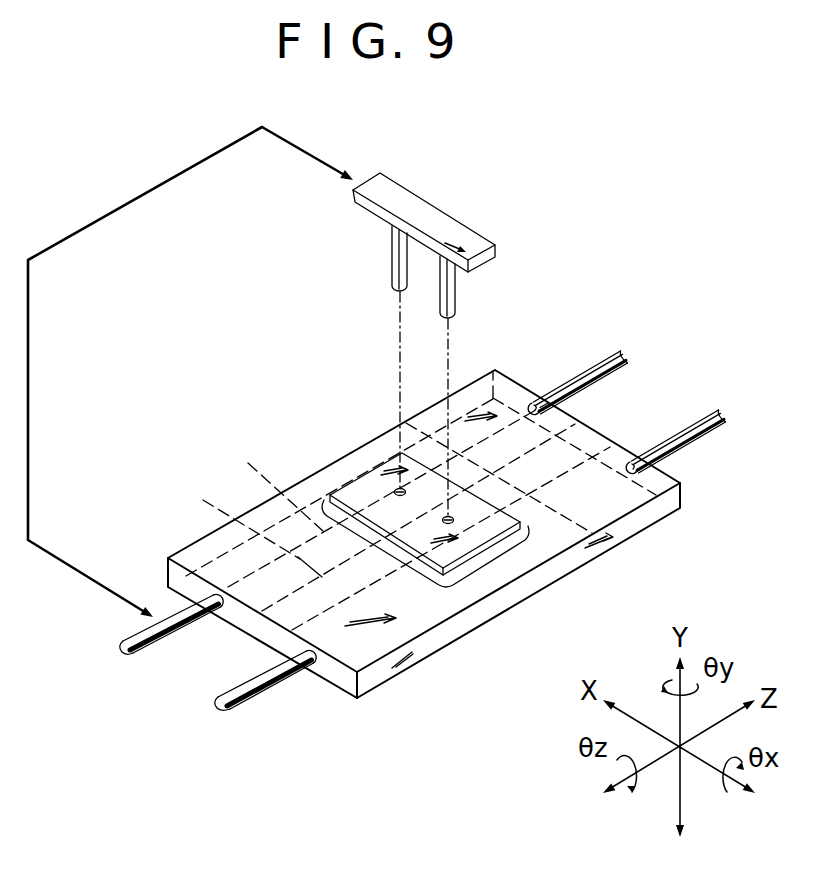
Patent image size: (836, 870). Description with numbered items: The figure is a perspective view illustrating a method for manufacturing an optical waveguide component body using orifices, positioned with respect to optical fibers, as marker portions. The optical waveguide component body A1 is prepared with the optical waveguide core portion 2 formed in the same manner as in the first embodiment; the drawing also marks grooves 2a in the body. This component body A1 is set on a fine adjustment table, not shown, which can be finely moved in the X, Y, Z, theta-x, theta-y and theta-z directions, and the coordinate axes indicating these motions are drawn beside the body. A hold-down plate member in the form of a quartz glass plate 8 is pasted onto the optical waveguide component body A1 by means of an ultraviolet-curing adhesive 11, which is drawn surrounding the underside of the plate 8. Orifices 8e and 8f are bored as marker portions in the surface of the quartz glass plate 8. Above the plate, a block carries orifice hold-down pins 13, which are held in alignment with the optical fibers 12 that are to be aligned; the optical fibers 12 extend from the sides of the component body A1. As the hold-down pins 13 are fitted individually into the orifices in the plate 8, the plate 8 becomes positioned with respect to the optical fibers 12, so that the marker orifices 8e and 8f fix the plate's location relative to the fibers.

The optical waveguide core portion 2 is at (258, 428).
The grooves in stage 2a is at (419, 501).
The quartz glass plate 8 is at (455, 565).
The orifice 8e is at (396, 490).
The orifice 8f is at (454, 519).
The ultraviolet-curing adhesive 11 is at (425, 576).
The optical fibers 12 is at (688, 430).
The orifice hold-down pins 13 is at (423, 210).
The optical waveguide component body A1 is at (617, 507).